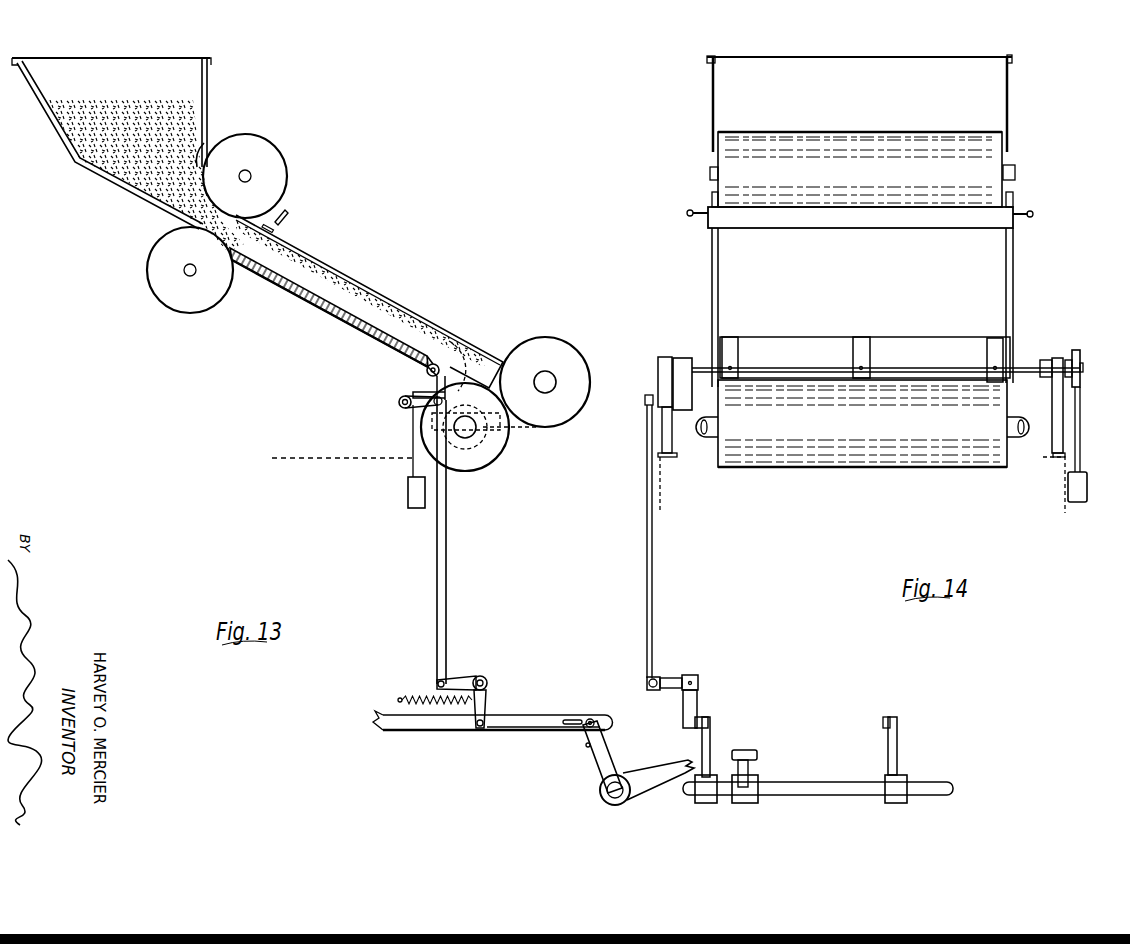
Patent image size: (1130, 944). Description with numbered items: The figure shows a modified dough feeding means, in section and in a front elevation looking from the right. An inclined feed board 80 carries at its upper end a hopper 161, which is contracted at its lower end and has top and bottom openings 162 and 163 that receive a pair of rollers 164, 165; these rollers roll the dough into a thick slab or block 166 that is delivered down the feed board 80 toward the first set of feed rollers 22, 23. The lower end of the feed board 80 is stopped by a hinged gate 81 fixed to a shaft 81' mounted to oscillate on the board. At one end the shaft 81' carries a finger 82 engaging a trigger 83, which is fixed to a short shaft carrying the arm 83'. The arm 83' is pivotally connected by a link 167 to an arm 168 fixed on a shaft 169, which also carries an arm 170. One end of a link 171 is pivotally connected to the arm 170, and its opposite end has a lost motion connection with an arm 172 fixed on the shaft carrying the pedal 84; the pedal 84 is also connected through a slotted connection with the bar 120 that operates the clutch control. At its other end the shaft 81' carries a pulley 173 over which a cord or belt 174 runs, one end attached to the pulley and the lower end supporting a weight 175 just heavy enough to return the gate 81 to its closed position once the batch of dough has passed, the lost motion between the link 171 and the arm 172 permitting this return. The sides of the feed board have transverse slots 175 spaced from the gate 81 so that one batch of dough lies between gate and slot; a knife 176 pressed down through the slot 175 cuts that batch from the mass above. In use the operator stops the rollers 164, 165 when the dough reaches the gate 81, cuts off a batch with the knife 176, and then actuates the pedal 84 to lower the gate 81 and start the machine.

In FIG. 13, the hopper 161 is at (163, 87).
In FIG. 14, the hopper 161 is at (982, 110).
In FIG. 13, the top opening 162 is at (201, 150).
In FIG. 13, the bottom opening 163 is at (200, 213).
In FIG. 13, the roller 164 is at (265, 168).
In FIG. 14, the roller 164 is at (985, 165).
In FIG. 13, the roller 165 is at (172, 285).
In FIG. 13, the slab or block of dough 166 is at (330, 272).
In FIG. 13, the feed board 80 is at (342, 312).
In FIG. 14, the feed board 80 is at (973, 270).
In FIG. 13, the hinged gate 81 is at (458, 348).
In FIG. 14, the hinged gate 81 is at (888, 323).
In FIG. 13, the shaft 81' is at (388, 363).
In FIG. 14, the shaft 81' is at (863, 344).
In FIG. 13, the finger 82 is at (413, 380).
In FIG. 14, the finger 82 is at (682, 362).
In FIG. 13, the trigger 83 is at (389, 403).
In FIG. 14, the trigger 83 is at (869, 439).
In FIG. 13, the arm 83' is at (342, 435).
In FIG. 14, the arm 83' is at (643, 379).
In FIG. 13, the roller 22 is at (557, 407).
In FIG. 13, the roller 23 is at (478, 457).
In FIG. 14, the roller 23 is at (893, 453).
In FIG. 13, the link 167 is at (440, 537).
In FIG. 14, the link 167 is at (650, 585).
In FIG. 13, the arm 168 is at (455, 682).
In FIG. 14, the arm 168 is at (647, 680).
In FIG. 13, the shaft 169 is at (482, 680).
In FIG. 14, the shaft 169 is at (668, 682).
In FIG. 13, the arm 170 is at (480, 707).
In FIG. 14, the arm 170 is at (690, 703).
In FIG. 13, the link 171 is at (537, 723).
In FIG. 14, the link 171 is at (698, 713).
In FIG. 13, the arm 172 is at (605, 762).
In FIG. 14, the arm 172 is at (707, 750).
In FIG. 14, the pulley 173 is at (1080, 350).
In FIG. 14, the cord or belt 174 is at (1080, 427).
In FIG. 13, the weight 175 is at (275, 233).
In FIG. 14, the weight 175 is at (1077, 490).
In FIG. 13, the knife 176 is at (285, 208).
In FIG. 14, the knife 176 is at (735, 216).
In FIG. 13, the pedal 84 is at (638, 778).
In FIG. 14, the pedal 84 is at (753, 753).
In FIG. 13, the bar 120 is at (445, 723).
In FIG. 14, the bar 120 is at (887, 717).